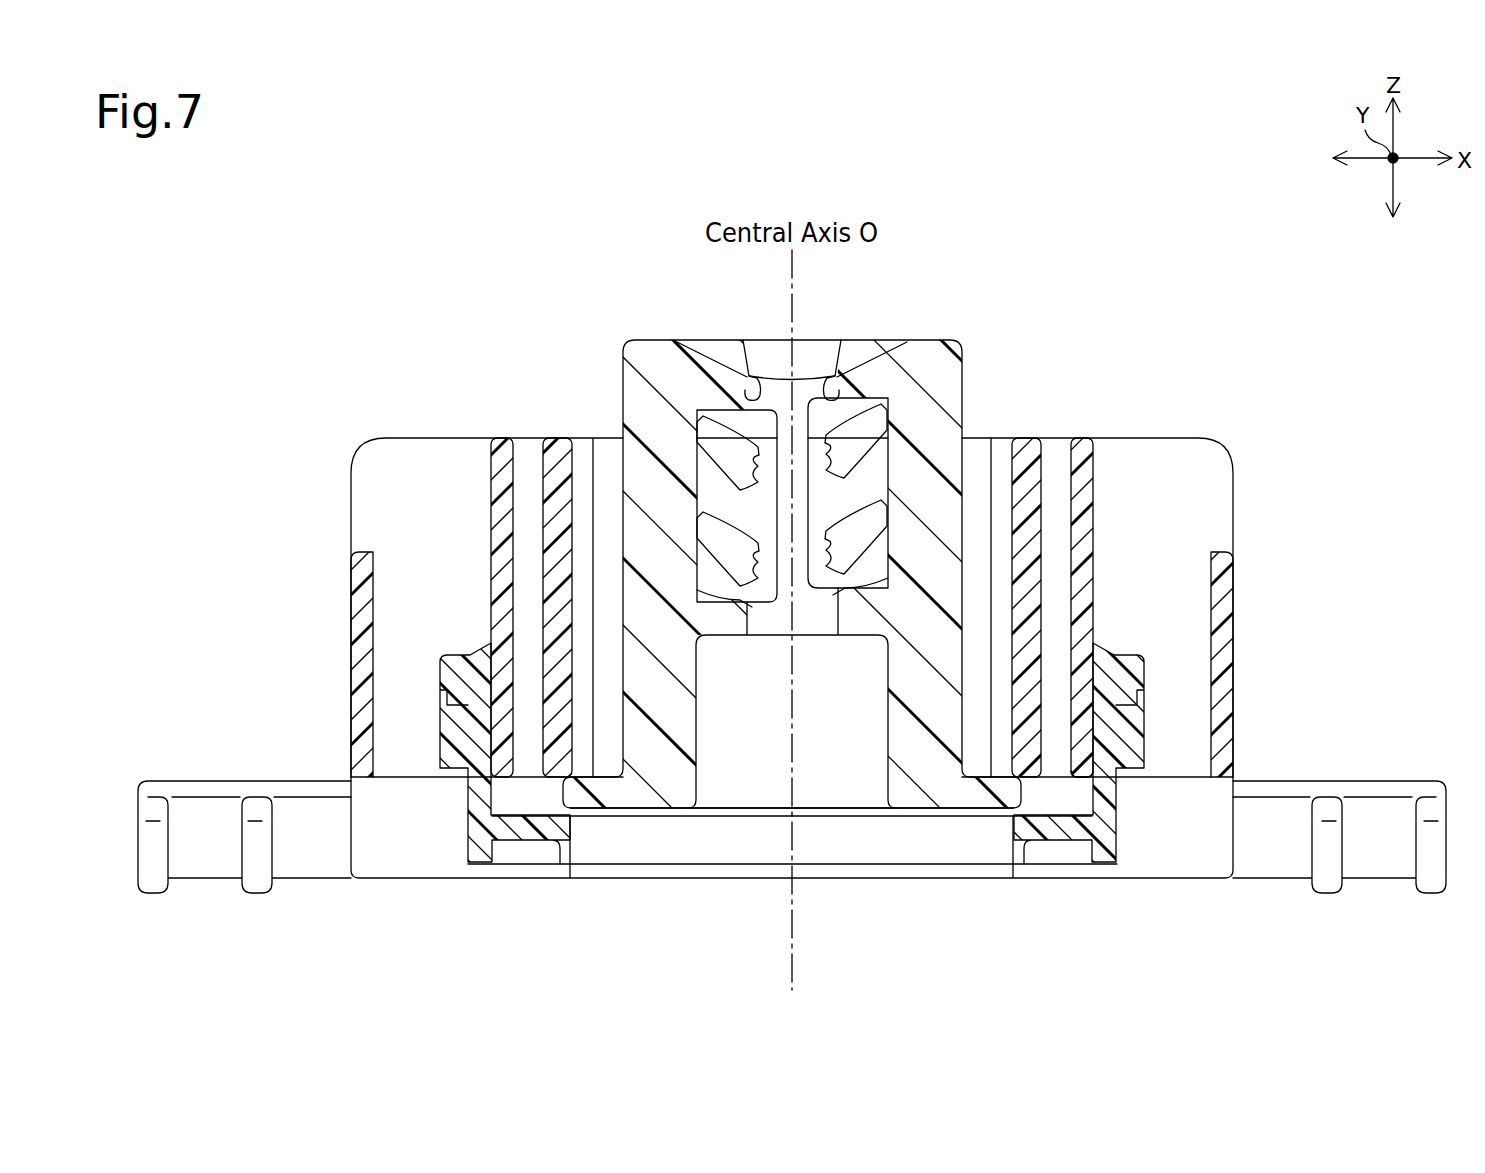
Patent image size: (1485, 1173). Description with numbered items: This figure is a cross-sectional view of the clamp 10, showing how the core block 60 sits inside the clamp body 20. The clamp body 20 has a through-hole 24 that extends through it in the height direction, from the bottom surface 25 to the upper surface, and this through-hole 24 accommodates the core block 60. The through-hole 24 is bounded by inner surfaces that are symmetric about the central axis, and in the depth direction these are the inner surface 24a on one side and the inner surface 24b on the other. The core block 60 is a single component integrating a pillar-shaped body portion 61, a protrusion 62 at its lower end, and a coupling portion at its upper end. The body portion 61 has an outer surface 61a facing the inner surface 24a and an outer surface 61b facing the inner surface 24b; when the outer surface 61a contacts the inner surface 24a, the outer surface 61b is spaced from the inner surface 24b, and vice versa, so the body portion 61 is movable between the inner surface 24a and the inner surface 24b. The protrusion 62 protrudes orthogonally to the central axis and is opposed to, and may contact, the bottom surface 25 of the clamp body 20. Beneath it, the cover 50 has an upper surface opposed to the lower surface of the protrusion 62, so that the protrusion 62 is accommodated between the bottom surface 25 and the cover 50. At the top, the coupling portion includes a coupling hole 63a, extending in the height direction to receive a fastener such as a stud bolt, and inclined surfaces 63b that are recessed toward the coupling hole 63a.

The connector 10 is at (1142, 284).
The clamp body 20 is at (1026, 445).
The through-hole 24 is at (1000, 472).
The inner surface 24a is at (565, 552).
The inner surface 24b is at (1018, 552).
The bottom surface 25 is at (1083, 785).
The cover 50 is at (1112, 850).
The core block 60 is at (619, 330).
The body portion 61 is at (628, 458).
The outer surface 61a is at (622, 531).
The outer surface 61b is at (962, 531).
The protrusion 62 is at (585, 805).
The coupling hole 63a is at (757, 380).
The inclined surfaces 63b is at (851, 380).